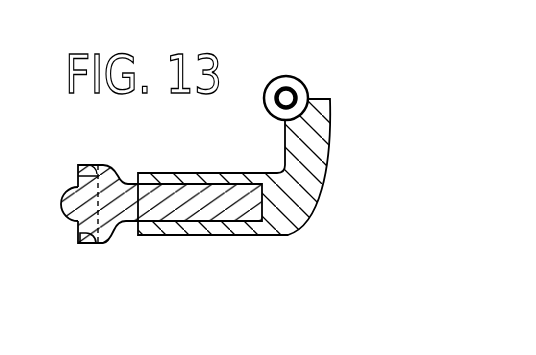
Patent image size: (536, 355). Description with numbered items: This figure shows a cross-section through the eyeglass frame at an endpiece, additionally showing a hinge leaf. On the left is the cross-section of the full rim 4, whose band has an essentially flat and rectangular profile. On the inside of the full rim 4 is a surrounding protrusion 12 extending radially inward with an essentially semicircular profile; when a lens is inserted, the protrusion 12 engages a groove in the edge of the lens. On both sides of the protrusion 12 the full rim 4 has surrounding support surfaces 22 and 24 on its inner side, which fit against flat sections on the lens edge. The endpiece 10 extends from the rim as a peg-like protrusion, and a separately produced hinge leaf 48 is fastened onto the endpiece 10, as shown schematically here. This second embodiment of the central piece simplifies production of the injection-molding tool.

The full rim 4 is at (58, 236).
The endpiece 10 is at (175, 207).
The protrusion 12 is at (76, 200).
The support surface 22 is at (95, 163).
The support surface 24 is at (90, 245).
The hinge leaf 48 is at (294, 145).